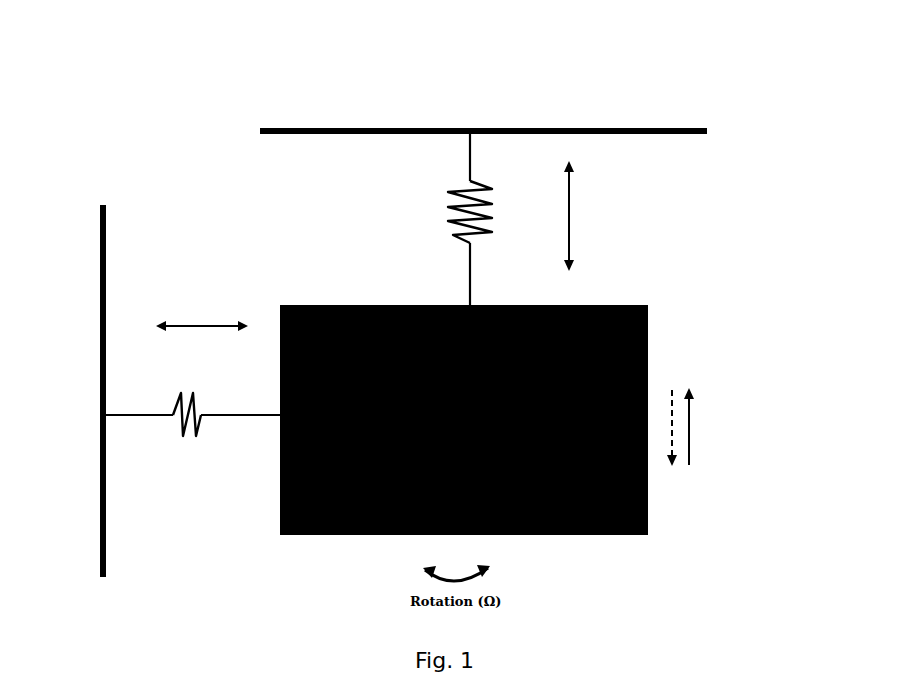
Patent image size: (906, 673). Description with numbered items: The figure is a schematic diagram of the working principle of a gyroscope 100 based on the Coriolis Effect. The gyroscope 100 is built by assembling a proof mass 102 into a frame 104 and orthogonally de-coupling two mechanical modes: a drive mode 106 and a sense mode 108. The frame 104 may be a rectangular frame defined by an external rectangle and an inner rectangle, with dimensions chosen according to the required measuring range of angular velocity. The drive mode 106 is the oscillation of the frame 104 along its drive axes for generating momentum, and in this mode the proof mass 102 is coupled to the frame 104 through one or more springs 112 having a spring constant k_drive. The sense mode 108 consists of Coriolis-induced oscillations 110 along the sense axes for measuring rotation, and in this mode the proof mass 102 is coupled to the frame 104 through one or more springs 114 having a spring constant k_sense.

The gyroscope 100 is at (628, 88).
The proof mass 102 is at (640, 337).
The frame 104 is at (267, 126).
The drive mode 106 is at (210, 318).
The sense mode 108 is at (562, 177).
The Coriolis-induced oscillations 110 is at (681, 417).
The drive spring 112 is at (138, 407).
The sense spring 114 is at (462, 145).